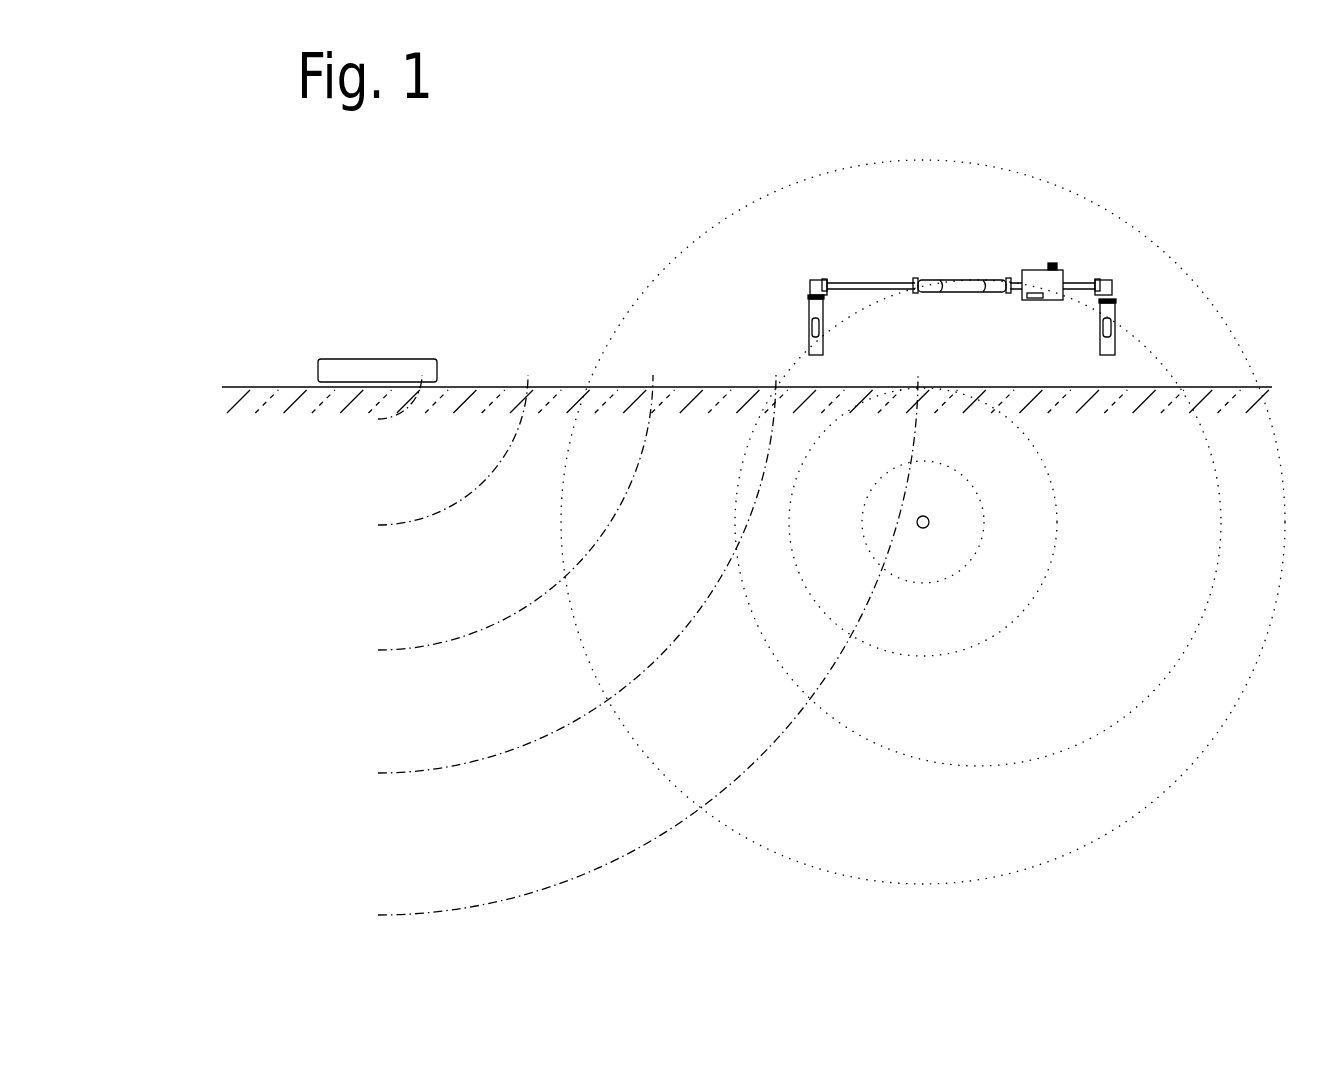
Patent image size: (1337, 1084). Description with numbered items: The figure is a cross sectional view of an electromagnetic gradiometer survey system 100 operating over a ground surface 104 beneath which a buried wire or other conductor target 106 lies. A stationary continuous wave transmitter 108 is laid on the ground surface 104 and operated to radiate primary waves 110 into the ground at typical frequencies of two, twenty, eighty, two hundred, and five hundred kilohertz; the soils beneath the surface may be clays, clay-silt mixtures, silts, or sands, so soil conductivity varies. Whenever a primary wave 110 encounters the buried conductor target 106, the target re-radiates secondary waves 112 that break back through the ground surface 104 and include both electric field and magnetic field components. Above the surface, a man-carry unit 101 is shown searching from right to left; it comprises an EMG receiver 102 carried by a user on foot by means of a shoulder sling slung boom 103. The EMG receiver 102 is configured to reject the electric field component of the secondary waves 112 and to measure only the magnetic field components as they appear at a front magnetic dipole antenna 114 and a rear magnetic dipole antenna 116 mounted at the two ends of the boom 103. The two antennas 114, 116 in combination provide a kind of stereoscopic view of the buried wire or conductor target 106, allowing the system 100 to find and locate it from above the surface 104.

The EMG survey system 100 is at (600, 133).
The man-carry unit 101 is at (783, 271).
The EMG receiver 102 is at (1022, 273).
The shoulder sling slung boom 103 is at (858, 287).
The ground surface 104 is at (527, 386).
The buried wires or other conductor targets 106 is at (947, 507).
The continuous wave (CW) transmitter 108 is at (406, 358).
The primary waves 110 is at (492, 623).
The secondary waves 112 is at (1083, 708).
The front magnetic dipole antenna 114 is at (823, 312).
The rear magnetic dipole antenna 116 is at (1117, 312).